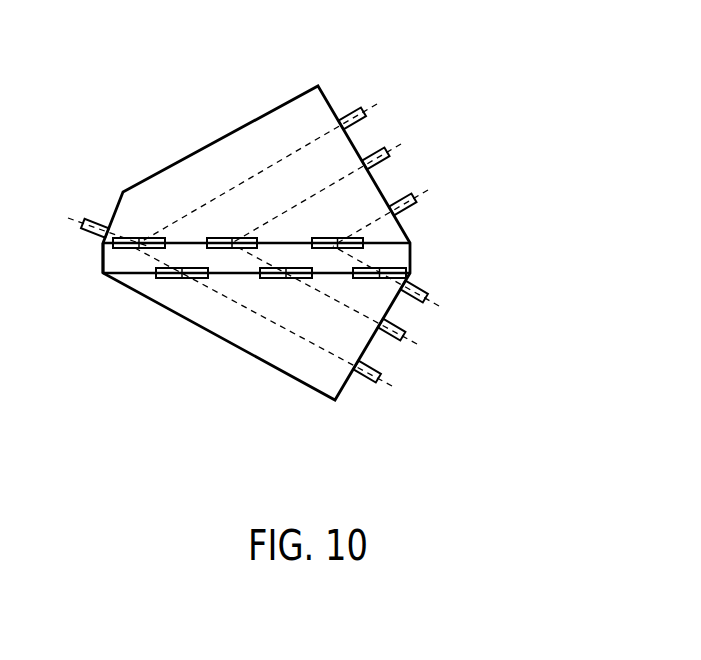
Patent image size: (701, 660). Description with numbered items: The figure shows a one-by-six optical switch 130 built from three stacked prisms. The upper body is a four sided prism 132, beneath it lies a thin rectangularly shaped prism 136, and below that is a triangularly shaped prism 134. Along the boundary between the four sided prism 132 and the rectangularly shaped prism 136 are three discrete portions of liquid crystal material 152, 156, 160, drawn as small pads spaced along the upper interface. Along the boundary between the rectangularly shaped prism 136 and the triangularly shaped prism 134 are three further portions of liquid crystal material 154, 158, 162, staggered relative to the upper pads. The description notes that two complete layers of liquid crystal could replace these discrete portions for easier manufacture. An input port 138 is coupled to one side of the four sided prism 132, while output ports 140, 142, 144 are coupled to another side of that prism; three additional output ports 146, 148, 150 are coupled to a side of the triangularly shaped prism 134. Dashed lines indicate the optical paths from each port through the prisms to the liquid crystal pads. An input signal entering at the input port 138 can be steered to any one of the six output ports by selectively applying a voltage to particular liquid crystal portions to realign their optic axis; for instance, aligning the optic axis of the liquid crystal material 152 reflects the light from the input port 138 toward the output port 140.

The switch 130 is at (500, 221).
The four sided prism 132 is at (263, 164).
The triangularly shaped prism 134 is at (331, 376).
The rectangularly shaped prism 136 is at (102, 262).
The input port 138 is at (88, 218).
The output port 140 is at (368, 113).
The output port 142 is at (388, 155).
The output port 144 is at (413, 199).
The output port 146 is at (430, 283).
The output port 148 is at (402, 338).
The output port 150 is at (377, 378).
The liquid crystal material 152 is at (140, 237).
The liquid crystal material 154 is at (182, 279).
The liquid crystal material 156 is at (232, 237).
The liquid crystal material 158 is at (288, 279).
The liquid crystal material 160 is at (333, 237).
The liquid crystal material 162 is at (375, 279).